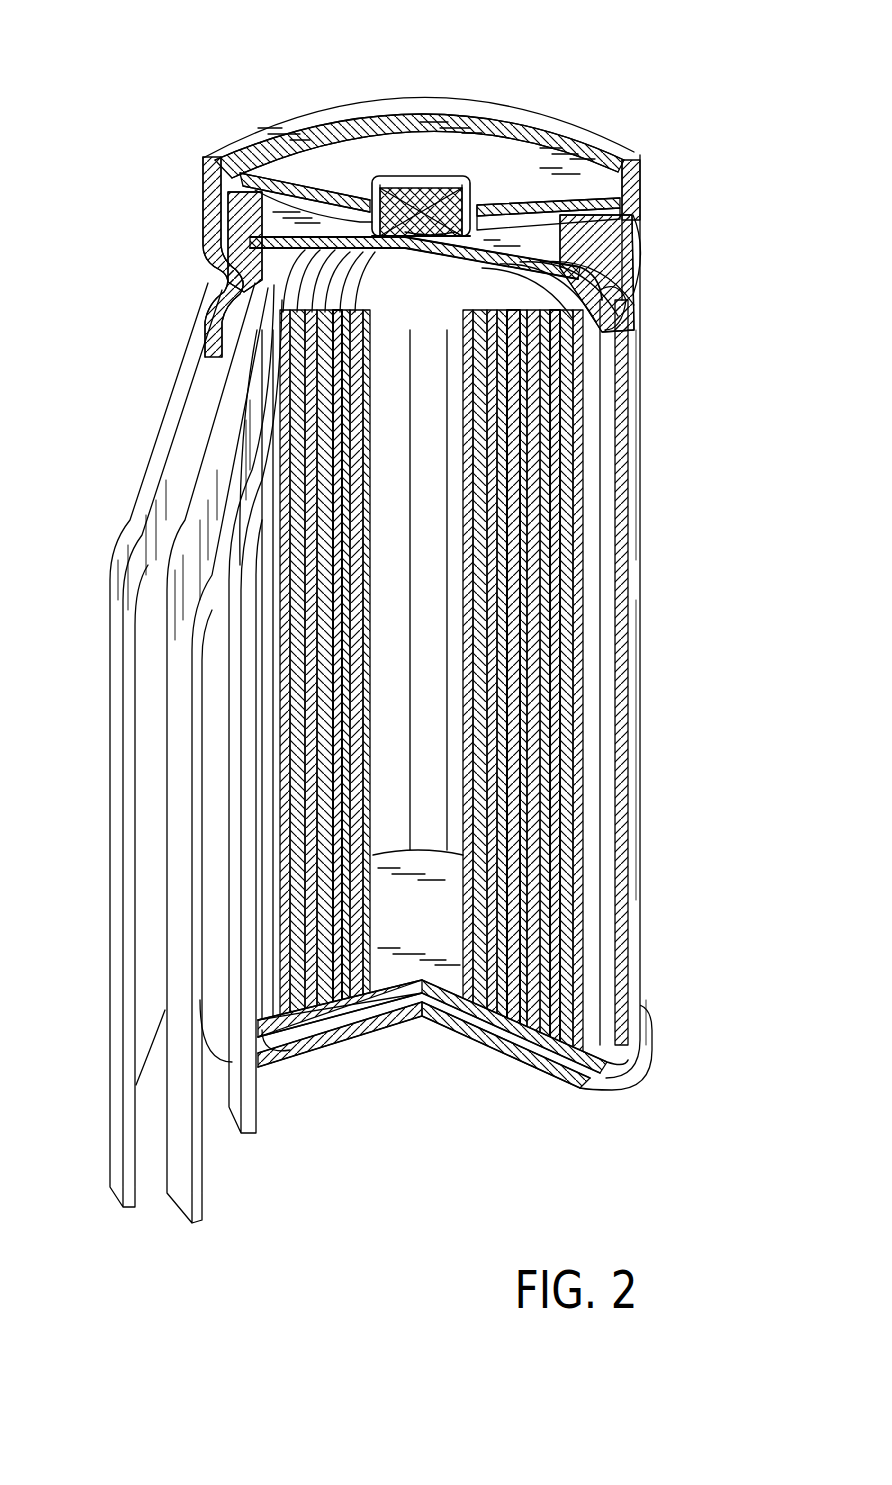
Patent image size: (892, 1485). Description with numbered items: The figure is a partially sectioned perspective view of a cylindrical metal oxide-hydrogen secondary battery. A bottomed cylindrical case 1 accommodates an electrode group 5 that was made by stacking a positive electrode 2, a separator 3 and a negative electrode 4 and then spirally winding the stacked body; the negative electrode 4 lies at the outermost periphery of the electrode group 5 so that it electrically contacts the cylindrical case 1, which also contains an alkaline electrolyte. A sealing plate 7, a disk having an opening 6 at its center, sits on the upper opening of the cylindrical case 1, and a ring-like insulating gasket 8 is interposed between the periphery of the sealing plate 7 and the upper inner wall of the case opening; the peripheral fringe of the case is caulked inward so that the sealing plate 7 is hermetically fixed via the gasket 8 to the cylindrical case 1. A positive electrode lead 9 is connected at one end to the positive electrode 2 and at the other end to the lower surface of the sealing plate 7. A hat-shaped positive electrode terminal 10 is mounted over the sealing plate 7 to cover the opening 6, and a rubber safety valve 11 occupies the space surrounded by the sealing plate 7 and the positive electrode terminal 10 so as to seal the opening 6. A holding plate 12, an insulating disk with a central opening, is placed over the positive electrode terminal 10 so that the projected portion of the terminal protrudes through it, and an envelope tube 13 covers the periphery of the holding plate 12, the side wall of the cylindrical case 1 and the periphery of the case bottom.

The cylindrical case 1 is at (641, 572).
The positive electrode 2 is at (253, 1135).
The separator 3 is at (205, 1188).
The negative electrode 4 is at (140, 1188).
The electrode group 5 is at (325, 1272).
The opening 6 is at (417, 240).
The sealing plate 7 is at (560, 240).
The insulating gasket 8 is at (206, 228).
The positive electrode lead 9 is at (383, 250).
The positive electrode terminal 10 is at (563, 228).
The rubber safety valve 11 is at (403, 208).
The holding plate 12 is at (624, 150).
The envelope tube 13 is at (556, 116).